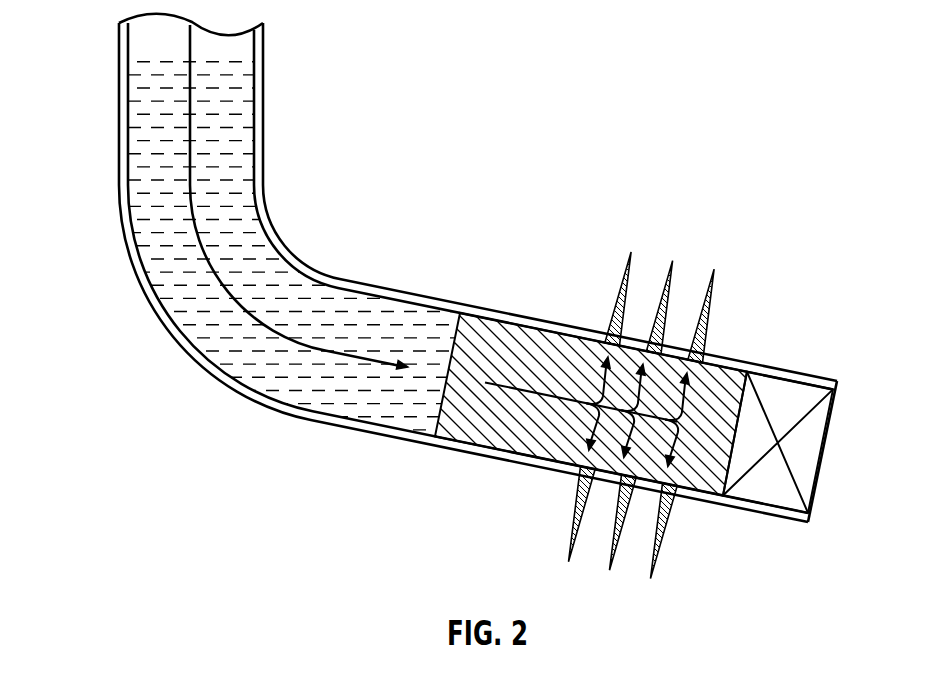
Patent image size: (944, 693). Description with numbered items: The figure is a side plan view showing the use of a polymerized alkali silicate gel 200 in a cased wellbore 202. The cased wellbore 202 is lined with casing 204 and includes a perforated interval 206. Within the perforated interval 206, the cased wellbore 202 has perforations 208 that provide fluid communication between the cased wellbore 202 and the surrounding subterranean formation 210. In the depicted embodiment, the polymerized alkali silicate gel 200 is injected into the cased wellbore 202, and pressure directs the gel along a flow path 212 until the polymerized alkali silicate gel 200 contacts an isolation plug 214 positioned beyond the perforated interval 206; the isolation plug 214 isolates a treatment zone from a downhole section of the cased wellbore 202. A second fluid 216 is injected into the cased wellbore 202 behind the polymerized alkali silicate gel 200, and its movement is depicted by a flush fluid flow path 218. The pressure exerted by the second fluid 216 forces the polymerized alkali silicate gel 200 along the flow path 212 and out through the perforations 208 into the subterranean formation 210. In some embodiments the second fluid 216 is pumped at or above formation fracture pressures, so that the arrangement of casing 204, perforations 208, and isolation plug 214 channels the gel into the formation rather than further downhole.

The polymerized alkali silicate gel 200 is at (725, 375).
The cased wellbore 202 is at (272, 218).
The casing 204 is at (120, 212).
The perforated interval 206 is at (750, 268).
The perforations 208 is at (685, 503).
The subterranean formation 210 is at (588, 305).
The flow path 212 is at (549, 409).
The isolation plug 214 is at (812, 461).
The second fluid 216 is at (346, 314).
The flush fluid flow path 218 is at (330, 368).